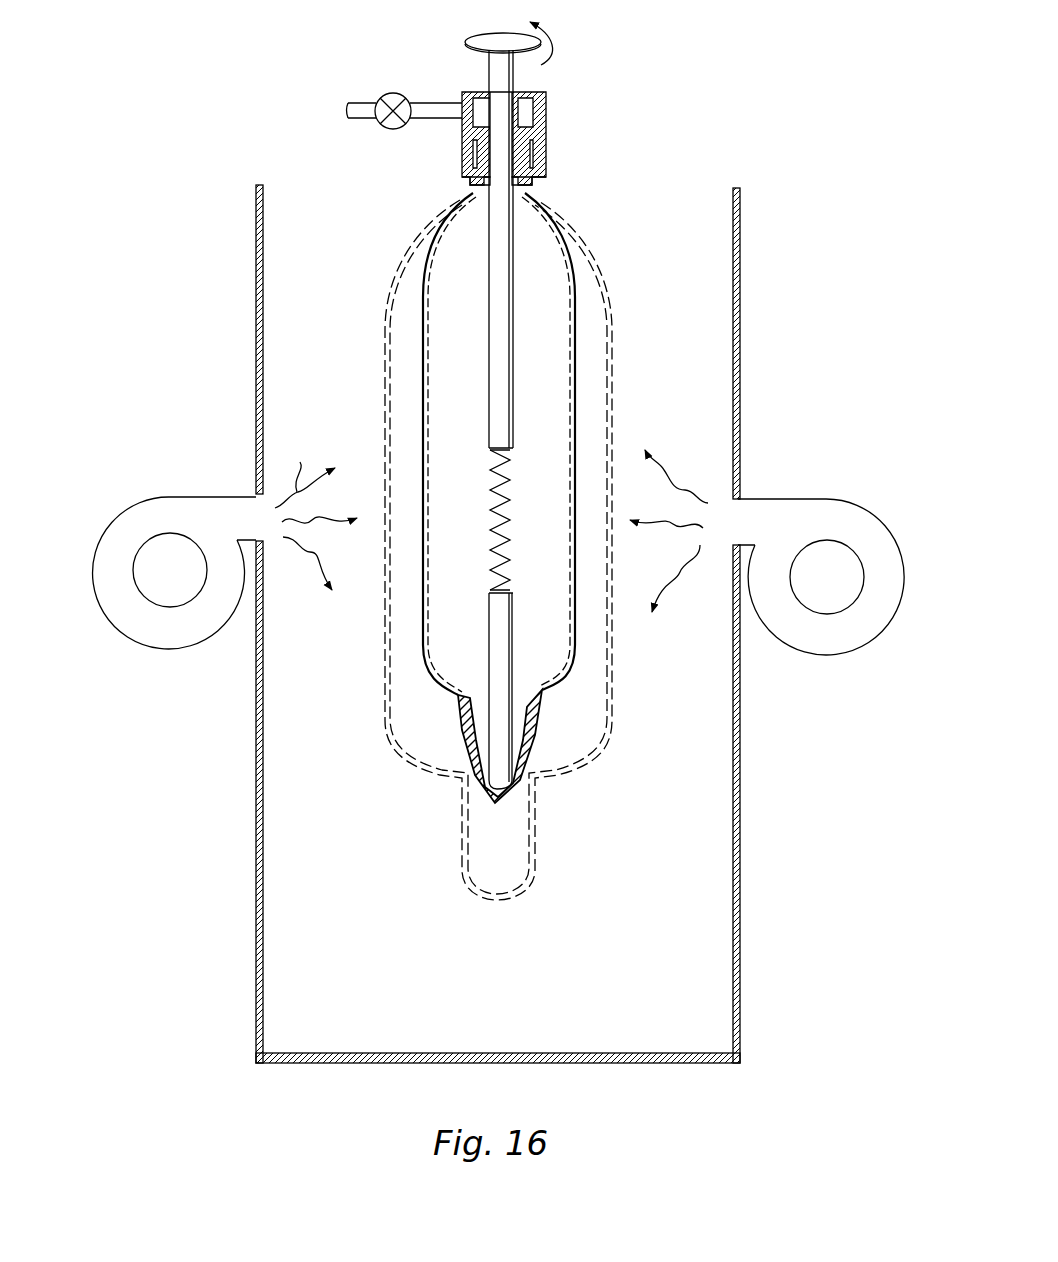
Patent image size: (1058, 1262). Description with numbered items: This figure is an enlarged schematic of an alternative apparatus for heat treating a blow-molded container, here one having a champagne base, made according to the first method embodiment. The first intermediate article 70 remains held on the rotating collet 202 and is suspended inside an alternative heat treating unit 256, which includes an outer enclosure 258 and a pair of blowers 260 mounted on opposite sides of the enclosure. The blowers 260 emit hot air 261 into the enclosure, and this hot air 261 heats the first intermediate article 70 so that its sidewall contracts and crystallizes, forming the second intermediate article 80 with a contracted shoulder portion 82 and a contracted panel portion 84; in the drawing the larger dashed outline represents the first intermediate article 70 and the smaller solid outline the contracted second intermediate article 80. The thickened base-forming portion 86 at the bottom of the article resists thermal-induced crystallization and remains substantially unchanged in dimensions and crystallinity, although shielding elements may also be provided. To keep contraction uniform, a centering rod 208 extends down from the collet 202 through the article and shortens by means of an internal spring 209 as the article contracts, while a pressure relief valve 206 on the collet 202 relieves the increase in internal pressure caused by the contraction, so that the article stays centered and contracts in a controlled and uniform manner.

The first intermediate article 70 is at (614, 403).
The second intermediate article 80 is at (611, 441).
The contracted shoulder portion 82 is at (574, 228).
The contracted panel portion 84 is at (578, 442).
The base-forming portion 86 is at (536, 730).
The rotating collet 202 is at (549, 117).
The pressure relief valve 206 is at (389, 90).
The centering rod 208 is at (515, 333).
The internal spring 209 is at (493, 557).
The heat treating unit 256 is at (748, 226).
The outer enclosure 258 is at (737, 747).
The blowers 260 is at (148, 503).
The hot air 261 is at (497, 524).